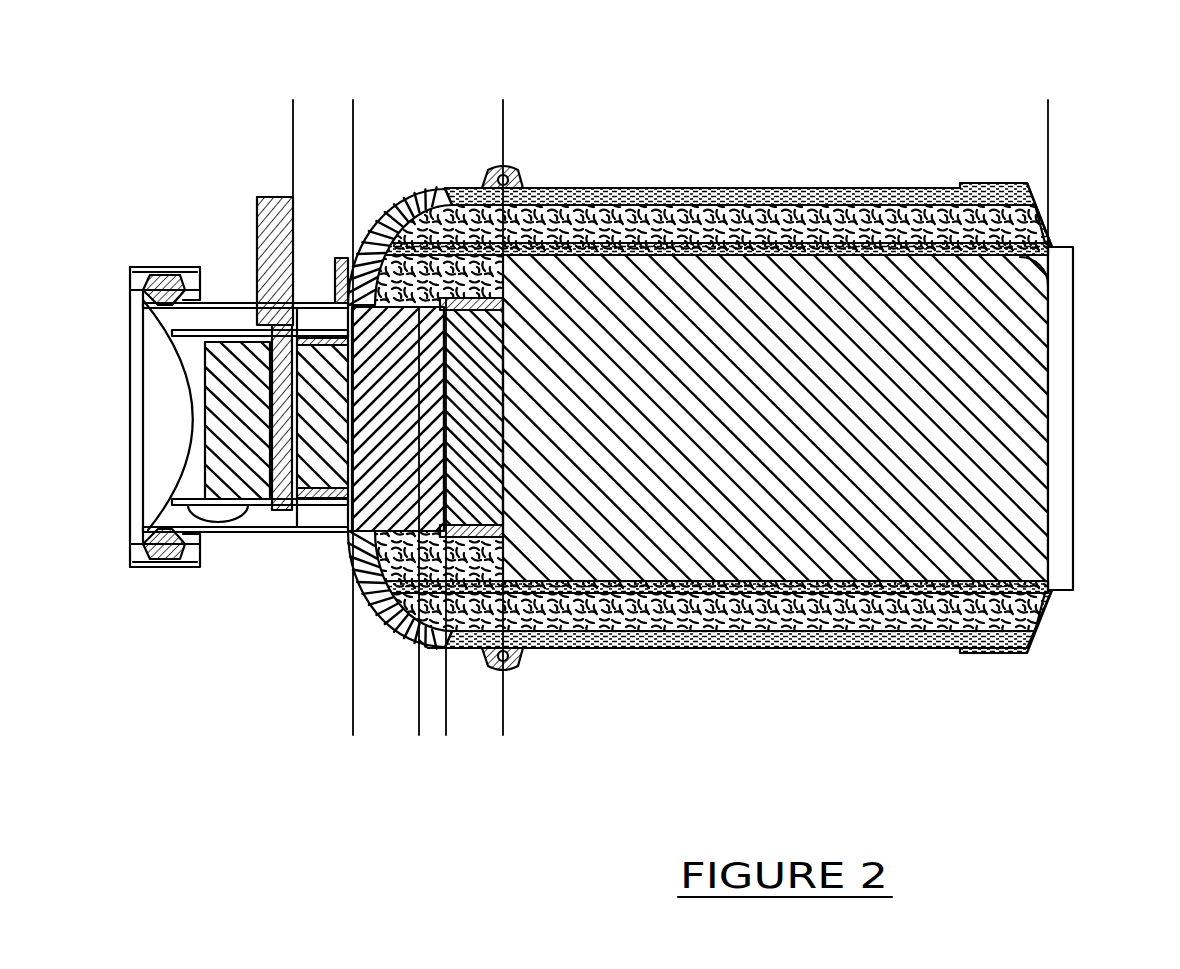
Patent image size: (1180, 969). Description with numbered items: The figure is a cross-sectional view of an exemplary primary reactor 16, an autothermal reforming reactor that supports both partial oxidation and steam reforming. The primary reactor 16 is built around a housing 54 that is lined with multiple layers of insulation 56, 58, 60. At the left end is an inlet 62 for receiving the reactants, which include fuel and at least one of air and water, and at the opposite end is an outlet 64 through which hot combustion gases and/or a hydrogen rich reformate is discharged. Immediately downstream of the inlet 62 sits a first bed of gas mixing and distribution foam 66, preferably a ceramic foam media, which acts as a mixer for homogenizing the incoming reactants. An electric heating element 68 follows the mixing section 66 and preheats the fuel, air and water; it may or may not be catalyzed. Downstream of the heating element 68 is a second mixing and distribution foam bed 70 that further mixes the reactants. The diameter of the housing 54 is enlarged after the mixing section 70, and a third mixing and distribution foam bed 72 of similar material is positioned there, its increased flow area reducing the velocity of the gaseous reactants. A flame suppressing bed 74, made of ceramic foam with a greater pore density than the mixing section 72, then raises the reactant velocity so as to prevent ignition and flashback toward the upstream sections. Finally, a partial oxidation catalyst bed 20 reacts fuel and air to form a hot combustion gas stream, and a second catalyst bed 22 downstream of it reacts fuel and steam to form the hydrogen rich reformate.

The primary reactor 16 is at (198, 178).
The partial oxidation catalyst bed 20 is at (503, 717).
The second catalyst bed 22 is at (1048, 113).
The housing 54 is at (1027, 653).
The insulation layer 56 is at (1010, 188).
The insulation layer 58 is at (1043, 227).
The insulation layer 60 is at (1053, 283).
The inlet 62 is at (132, 533).
The outlet 64 is at (1060, 427).
The first bed of gas mixing and distribution foam 66 is at (233, 353).
The electric heating element 68 is at (283, 515).
The second mixing and distribution foam bed 70 is at (353, 113).
The third mixing and distribution foam bed 72 is at (419, 717).
The flame suppressing bed 74 is at (427, 647).